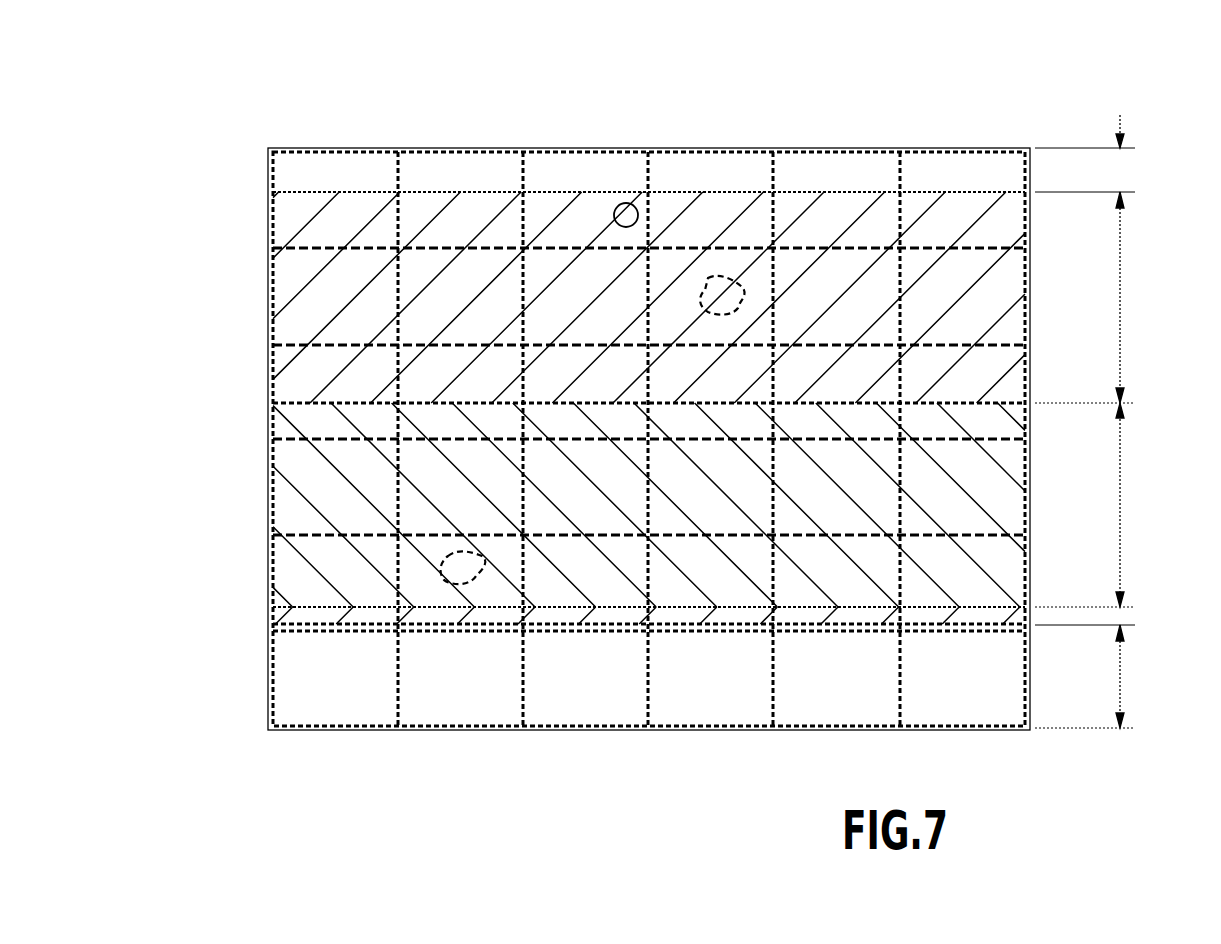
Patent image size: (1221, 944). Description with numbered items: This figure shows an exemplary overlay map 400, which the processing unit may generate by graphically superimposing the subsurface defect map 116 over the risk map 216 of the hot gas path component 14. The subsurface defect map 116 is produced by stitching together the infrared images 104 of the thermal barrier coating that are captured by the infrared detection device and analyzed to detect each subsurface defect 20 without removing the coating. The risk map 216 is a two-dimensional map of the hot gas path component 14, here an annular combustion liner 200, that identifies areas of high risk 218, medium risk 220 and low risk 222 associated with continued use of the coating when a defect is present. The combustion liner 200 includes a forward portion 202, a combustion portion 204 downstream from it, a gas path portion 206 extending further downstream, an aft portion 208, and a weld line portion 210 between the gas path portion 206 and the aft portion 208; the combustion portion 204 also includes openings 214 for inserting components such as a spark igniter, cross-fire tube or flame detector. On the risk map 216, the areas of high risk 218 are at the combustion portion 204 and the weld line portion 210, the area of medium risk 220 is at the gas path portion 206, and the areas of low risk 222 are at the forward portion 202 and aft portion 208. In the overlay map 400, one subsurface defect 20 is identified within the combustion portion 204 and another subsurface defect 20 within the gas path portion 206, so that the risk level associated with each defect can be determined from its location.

The combustion liner 200 is at (185, 145).
The forward portion 202 is at (1120, 172).
The combustion portion 204 is at (1120, 305).
The gas path portion 206 is at (1120, 508).
The aft portion 208 is at (1120, 675).
The weld line portion 210 is at (1120, 618).
The opening 214 is at (626, 203).
The risk map 216 is at (962, 103).
The area of high risk 218 is at (315, 268).
The area of medium risk 220 is at (293, 503).
The area of low risk 222 is at (318, 155).
The subsurface defect map 116 is at (453, 151).
The infrared images 104 is at (270, 424).
The hot gas path component 14 is at (845, 138).
The subsurface defect 20 is at (708, 276).
The overlay map 400 is at (663, 740).